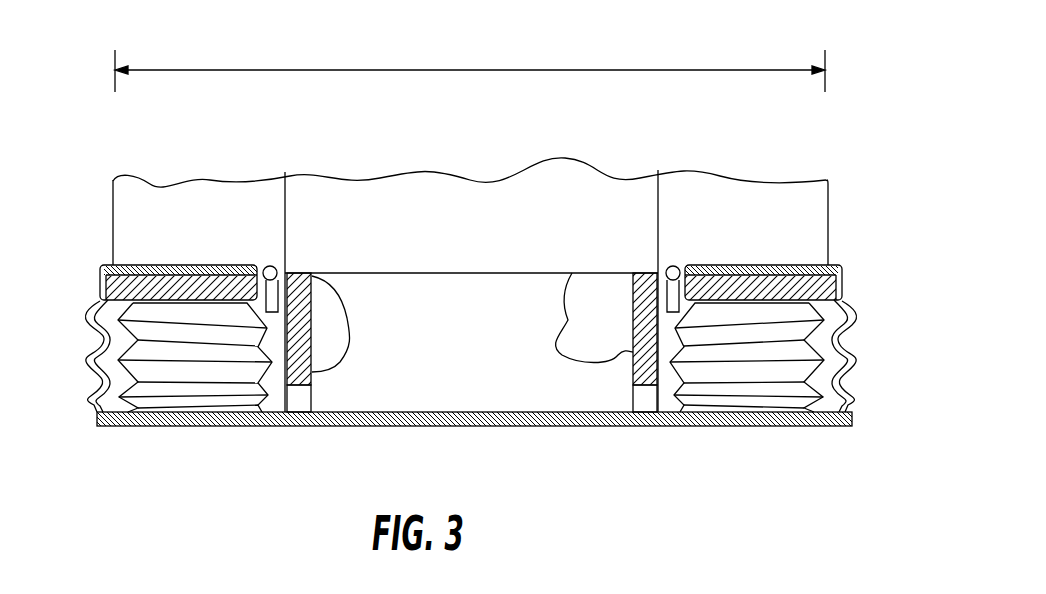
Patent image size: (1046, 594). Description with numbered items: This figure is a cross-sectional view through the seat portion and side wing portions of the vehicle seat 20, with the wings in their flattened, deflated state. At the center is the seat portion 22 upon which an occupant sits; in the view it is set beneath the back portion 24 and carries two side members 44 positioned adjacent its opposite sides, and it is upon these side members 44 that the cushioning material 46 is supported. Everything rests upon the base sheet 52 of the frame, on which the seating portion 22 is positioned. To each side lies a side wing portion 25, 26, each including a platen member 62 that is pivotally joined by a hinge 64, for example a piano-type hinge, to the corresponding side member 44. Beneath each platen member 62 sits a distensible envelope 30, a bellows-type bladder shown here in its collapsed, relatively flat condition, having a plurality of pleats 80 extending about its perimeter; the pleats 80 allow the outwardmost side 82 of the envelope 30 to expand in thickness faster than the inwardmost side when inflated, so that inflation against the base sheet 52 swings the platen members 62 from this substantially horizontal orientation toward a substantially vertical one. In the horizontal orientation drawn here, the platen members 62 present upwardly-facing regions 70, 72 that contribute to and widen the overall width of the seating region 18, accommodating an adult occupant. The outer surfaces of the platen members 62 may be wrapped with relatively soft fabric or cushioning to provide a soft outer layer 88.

The seating region 18 is at (305, 70).
The vehicle seat 20 is at (886, 120).
The seat portion 22 is at (528, 270).
The back portion 24 is at (390, 222).
The side wing portion 25 is at (152, 262).
The side wing portion 26 is at (800, 262).
The distensible envelope 30 is at (100, 344).
The side member 44 is at (312, 355).
The cushioning material 46 is at (436, 273).
The base sheet 52 is at (232, 427).
The platen member 62 is at (133, 284).
The hinge 64 is at (269, 265).
The upwardly-facing region 70 is at (187, 265).
The upwardly-facing region 72 is at (740, 265).
The pleats 80 is at (92, 387).
The outwardmost side 82 is at (95, 306).
The soft outer layer 88 is at (223, 265).